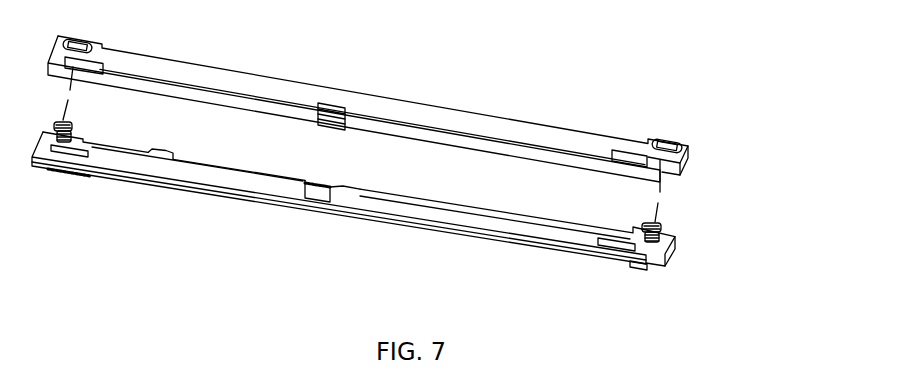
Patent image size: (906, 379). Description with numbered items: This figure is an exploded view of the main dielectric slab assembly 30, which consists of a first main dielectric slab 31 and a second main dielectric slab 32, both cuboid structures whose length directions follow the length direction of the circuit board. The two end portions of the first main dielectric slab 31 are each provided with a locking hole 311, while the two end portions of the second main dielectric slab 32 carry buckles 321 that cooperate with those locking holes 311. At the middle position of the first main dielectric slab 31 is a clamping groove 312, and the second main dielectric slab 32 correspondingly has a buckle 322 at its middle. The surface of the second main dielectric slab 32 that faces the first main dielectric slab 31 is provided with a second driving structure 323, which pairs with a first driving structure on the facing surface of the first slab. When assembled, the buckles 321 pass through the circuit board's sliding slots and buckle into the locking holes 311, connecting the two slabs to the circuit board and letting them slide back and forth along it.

The slide rail assembly 30 is at (104, 25).
The first main dielectric slab 31 is at (358, 98).
The locking hole 311 is at (665, 150).
The clamping groove 312 is at (330, 110).
The second main dielectric slab 32 is at (372, 213).
The buckle 321 is at (662, 232).
The buckle 322 is at (313, 198).
The second driving structure 323 is at (198, 166).